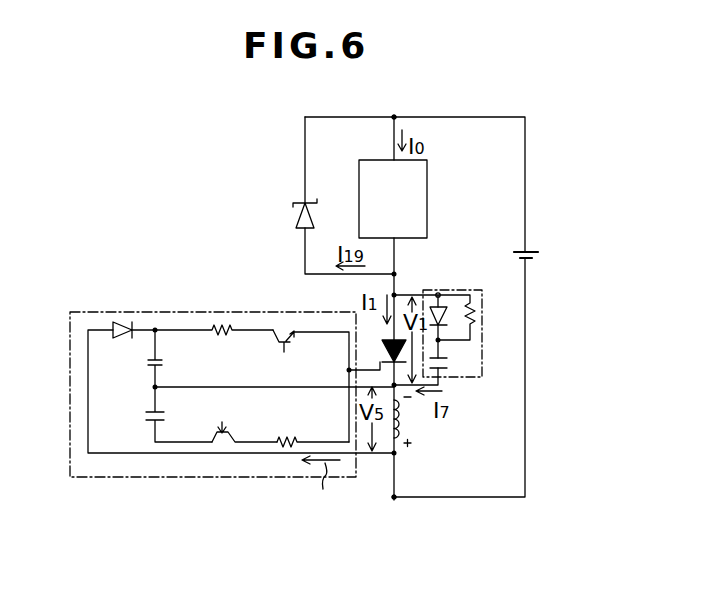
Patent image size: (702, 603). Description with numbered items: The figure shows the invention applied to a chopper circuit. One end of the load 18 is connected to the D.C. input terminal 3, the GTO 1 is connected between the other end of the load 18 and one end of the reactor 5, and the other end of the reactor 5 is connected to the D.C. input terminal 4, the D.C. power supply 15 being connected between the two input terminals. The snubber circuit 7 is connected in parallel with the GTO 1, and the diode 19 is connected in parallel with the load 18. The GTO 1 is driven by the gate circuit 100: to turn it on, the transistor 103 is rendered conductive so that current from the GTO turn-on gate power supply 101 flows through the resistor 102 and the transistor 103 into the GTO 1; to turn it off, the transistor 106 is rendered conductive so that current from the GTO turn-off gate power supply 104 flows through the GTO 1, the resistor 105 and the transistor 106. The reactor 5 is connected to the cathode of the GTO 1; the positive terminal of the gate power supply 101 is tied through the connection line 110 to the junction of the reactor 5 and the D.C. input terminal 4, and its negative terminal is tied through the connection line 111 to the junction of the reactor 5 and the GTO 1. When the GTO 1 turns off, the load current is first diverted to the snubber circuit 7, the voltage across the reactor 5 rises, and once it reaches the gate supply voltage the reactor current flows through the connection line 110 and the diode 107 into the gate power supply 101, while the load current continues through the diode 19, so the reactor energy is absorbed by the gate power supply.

The GTO 1 is at (387, 352).
The D.C. input terminal 3 is at (394, 116).
The D.C. input terminal 4 is at (395, 499).
The reactor 5 is at (401, 421).
The snubber circuit 7 is at (470, 377).
The D.C. power supply 15 is at (513, 252).
The load 18 is at (428, 190).
The diode 19 is at (298, 215).
The gate circuit 100 is at (149, 311).
The GTO turn-on gate power supply 101 is at (164, 362).
The resistor 102 is at (218, 325).
The transistor 103 is at (290, 346).
The GTO turn-off gate power supply 104 is at (165, 416).
The resistor 105 is at (293, 440).
The transistor 106 is at (229, 429).
The diode 107 is at (128, 340).
The connection line 110 is at (105, 453).
The connection line 111 is at (241, 386).